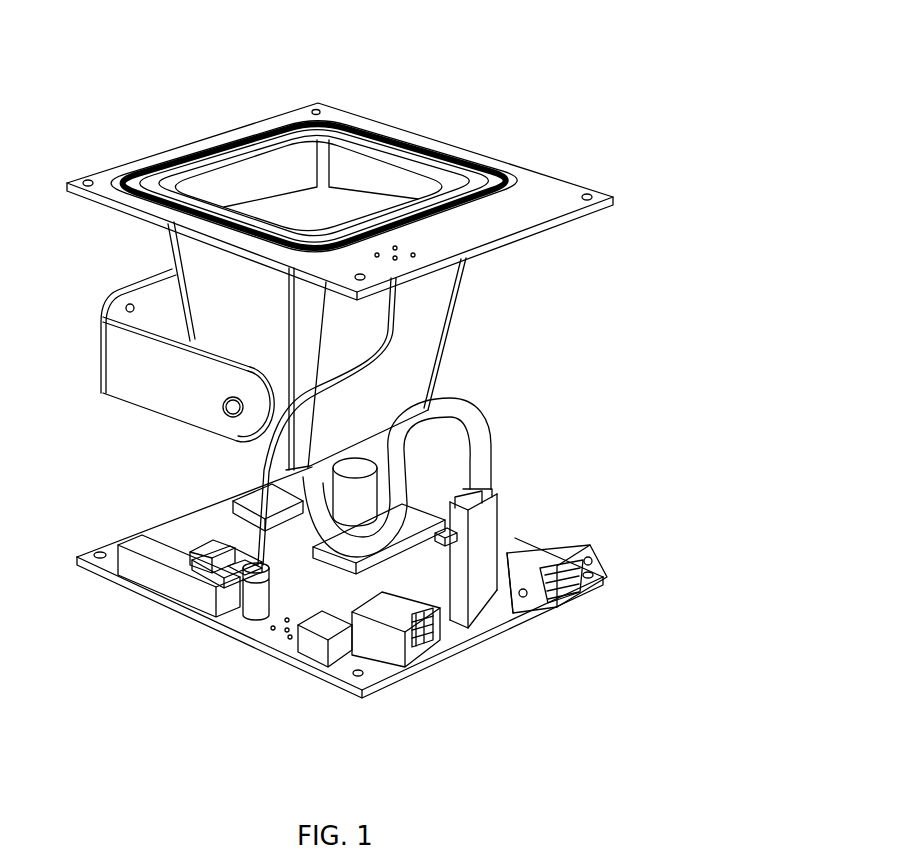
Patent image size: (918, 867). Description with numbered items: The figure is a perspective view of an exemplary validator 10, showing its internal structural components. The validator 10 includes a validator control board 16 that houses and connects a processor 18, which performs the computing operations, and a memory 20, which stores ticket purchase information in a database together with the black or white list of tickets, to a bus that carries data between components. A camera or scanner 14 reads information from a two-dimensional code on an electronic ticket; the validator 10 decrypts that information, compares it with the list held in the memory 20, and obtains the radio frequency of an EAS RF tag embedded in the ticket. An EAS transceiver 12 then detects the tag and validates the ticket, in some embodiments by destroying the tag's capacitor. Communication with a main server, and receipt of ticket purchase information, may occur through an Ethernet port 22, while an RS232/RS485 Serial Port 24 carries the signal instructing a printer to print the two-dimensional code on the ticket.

The validator 10 is at (369, 101).
The EAS transceiver 12 is at (468, 147).
The camera or scanner 14 is at (447, 344).
The validator control board 16 is at (253, 641).
The processor 18 is at (416, 565).
The memory 20 is at (239, 497).
The Ethernet port 22 is at (399, 652).
The RS232/RS485 Serial Port 24 is at (552, 554).